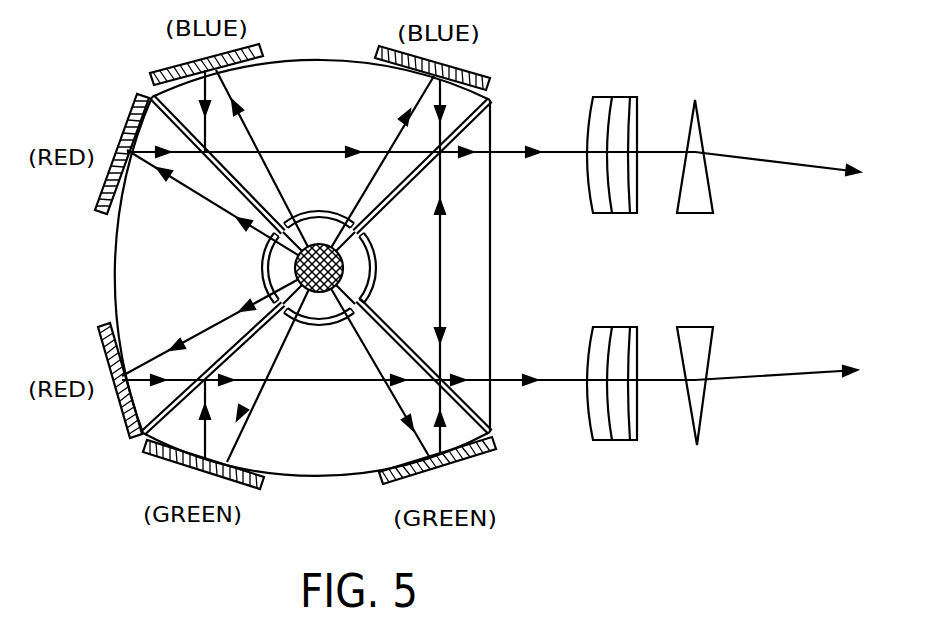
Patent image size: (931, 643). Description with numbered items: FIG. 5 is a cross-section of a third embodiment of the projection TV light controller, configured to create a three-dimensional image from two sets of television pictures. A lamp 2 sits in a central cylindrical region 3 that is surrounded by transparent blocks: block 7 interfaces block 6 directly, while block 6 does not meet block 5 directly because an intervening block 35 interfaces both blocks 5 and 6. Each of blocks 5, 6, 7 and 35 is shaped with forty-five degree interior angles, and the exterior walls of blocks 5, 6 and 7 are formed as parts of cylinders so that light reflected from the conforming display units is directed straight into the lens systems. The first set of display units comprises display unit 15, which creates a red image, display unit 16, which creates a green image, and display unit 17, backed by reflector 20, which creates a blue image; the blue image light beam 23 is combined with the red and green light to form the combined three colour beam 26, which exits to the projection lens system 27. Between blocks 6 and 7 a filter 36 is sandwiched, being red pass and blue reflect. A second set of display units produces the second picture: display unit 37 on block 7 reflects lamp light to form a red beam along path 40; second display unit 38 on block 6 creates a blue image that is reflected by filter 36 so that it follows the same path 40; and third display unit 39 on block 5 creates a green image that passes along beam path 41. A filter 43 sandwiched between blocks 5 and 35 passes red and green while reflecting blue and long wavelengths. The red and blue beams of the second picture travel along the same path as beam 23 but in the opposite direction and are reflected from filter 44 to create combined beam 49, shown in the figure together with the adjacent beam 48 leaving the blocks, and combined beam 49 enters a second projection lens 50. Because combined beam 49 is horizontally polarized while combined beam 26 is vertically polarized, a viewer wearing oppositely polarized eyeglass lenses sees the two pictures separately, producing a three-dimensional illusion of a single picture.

The lamp 2 is at (345, 265).
The cylindrical region 3 is at (325, 222).
The block 5 is at (343, 465).
The block 6 is at (343, 72).
The block 7 is at (127, 290).
The display unit 15 is at (132, 440).
The display unit 16 is at (262, 484).
The display unit 17 is at (372, 58).
The reflector 20 is at (338, 383).
The blue image light beam 23 is at (440, 232).
The combined three colour beam 26 is at (520, 380).
The projection lens system 27 is at (717, 449).
The intervening block 35 is at (490, 275).
The filter 36 is at (248, 158).
The display unit 37 is at (140, 93).
The second display unit 38 is at (263, 52).
The third display unit 39 is at (492, 448).
The beam path 40 is at (213, 202).
The beam path 41 is at (428, 427).
The filter 43 is at (396, 338).
The filter 44 is at (495, 122).
The upper combined beam 48 is at (333, 150).
The combined beam 49 is at (556, 151).
The second projection lens 50 is at (717, 84).